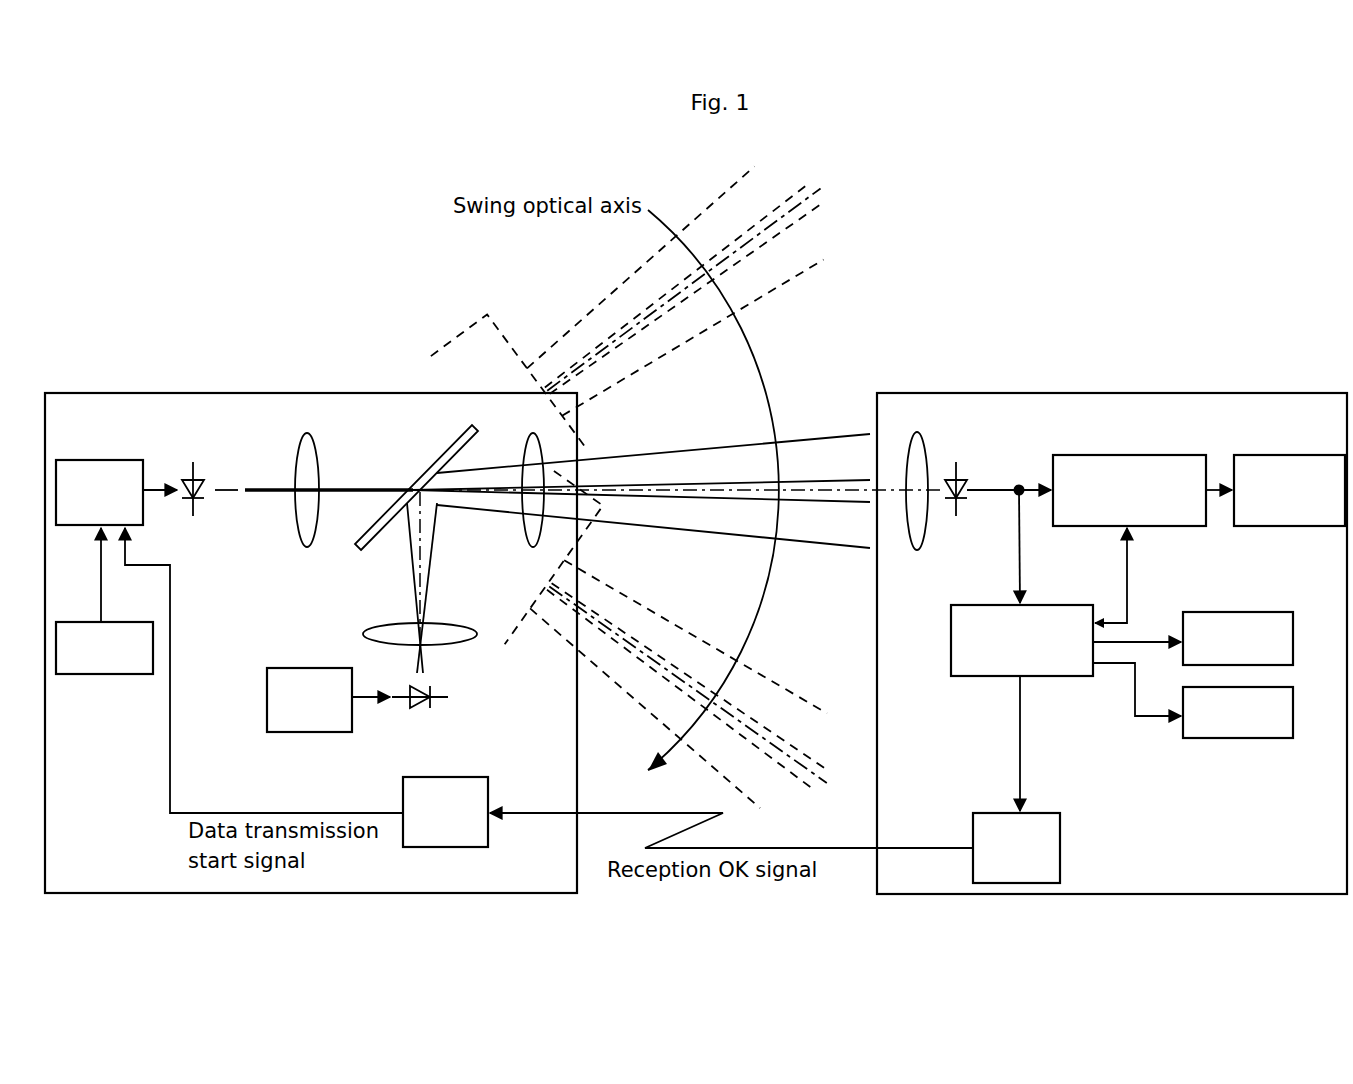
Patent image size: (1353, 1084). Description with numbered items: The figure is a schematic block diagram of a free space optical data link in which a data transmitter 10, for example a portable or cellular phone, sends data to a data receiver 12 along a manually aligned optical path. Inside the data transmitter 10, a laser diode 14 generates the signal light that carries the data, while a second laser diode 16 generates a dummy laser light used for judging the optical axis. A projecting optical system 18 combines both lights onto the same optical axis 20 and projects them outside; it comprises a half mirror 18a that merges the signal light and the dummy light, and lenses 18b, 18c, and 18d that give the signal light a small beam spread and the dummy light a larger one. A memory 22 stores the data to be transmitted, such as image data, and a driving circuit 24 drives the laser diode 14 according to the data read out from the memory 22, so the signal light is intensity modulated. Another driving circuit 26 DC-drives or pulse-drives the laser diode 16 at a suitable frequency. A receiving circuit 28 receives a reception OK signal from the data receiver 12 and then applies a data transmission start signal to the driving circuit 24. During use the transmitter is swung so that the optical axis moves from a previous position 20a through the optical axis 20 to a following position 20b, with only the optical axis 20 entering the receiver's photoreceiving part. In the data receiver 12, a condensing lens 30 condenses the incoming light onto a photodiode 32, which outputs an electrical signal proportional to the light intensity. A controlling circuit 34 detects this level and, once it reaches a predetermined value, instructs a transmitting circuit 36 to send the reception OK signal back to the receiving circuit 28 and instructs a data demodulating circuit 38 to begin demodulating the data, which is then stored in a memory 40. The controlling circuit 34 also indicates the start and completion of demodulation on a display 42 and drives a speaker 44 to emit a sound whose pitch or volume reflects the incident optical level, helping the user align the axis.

The data transmitter 10 is at (540, 883).
The data receiver 12 is at (1314, 883).
The laser diode 14 is at (213, 472).
The laser diode 16 is at (402, 715).
The projecting optical system 18 is at (394, 538).
The half mirror 18a is at (453, 450).
The lens 18b is at (300, 513).
The lens 18c is at (530, 441).
The lens 18d is at (380, 635).
The optical axis 20 is at (660, 497).
The previous optical axis 20a is at (762, 258).
The following optical axis 20b is at (752, 723).
The memory 22 is at (108, 676).
The driving circuit 24 is at (118, 462).
The driving circuit 26 is at (307, 675).
The receiving circuit 28 is at (463, 782).
The condensing lens 30 is at (915, 537).
The photodiode 32 is at (968, 473).
The controlling circuit 34 is at (956, 632).
The transmitting circuit 36 is at (1053, 845).
The data demodulating circuit 38 is at (1133, 467).
The memory 40 is at (1290, 465).
The display 42 is at (1235, 617).
The speaker 44 is at (1248, 728).